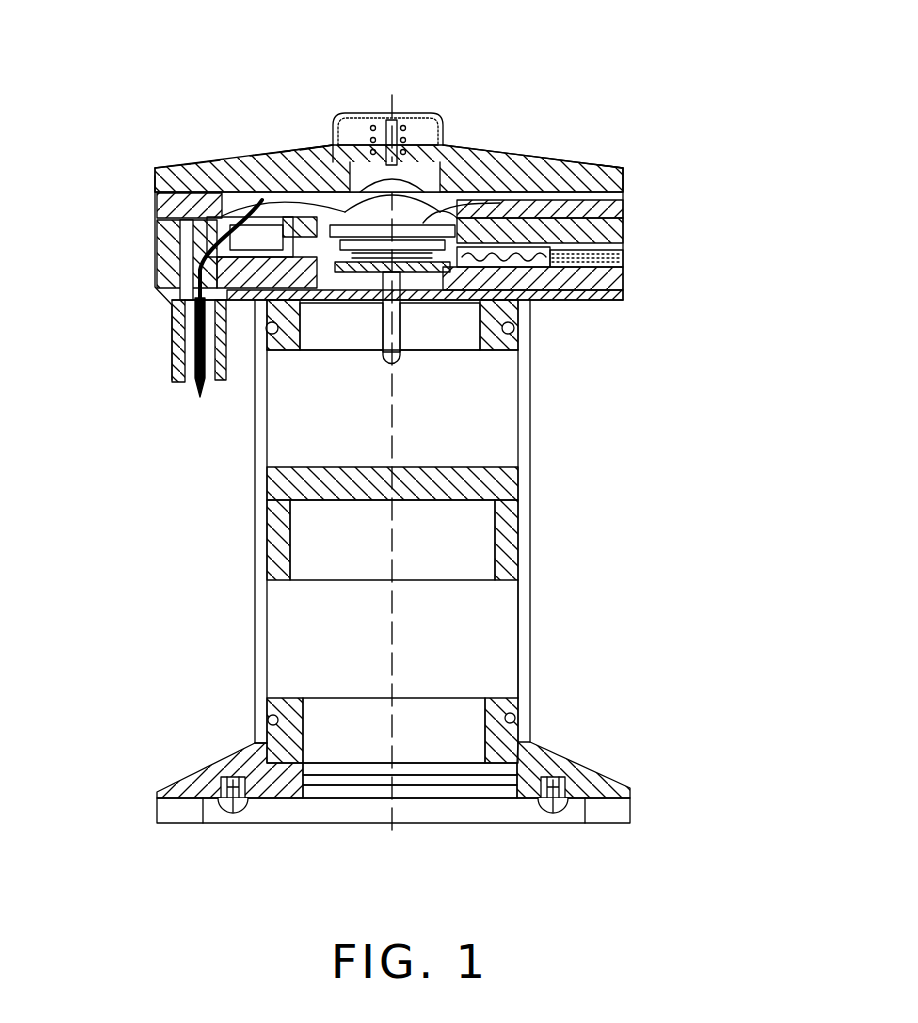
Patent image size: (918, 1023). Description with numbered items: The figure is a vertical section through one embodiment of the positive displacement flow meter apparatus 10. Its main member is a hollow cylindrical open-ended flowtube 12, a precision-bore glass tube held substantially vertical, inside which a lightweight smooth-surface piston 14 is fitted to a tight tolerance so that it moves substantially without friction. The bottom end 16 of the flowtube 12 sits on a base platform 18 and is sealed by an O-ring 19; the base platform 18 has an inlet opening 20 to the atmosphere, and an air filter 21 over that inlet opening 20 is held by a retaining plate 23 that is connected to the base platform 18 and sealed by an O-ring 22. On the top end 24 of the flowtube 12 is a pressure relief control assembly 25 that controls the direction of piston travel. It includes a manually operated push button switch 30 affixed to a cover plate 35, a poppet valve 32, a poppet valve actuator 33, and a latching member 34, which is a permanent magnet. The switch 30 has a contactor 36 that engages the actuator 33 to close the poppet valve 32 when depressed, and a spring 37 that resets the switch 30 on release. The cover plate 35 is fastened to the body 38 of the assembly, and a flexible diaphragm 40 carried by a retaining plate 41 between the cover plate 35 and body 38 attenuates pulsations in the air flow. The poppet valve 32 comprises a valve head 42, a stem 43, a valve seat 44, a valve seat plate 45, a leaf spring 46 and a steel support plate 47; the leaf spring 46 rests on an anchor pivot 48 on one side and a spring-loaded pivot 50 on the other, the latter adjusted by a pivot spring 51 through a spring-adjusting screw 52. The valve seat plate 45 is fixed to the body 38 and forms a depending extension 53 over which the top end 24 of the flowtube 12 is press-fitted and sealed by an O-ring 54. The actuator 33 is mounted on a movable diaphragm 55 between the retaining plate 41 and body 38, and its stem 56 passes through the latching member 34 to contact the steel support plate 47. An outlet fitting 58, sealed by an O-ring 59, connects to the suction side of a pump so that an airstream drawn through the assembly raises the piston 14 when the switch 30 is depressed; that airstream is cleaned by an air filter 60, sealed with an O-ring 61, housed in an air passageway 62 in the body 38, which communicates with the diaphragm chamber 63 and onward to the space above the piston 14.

The flow meter apparatus 10 is at (643, 410).
The flowtube 12 is at (523, 540).
The piston 14 is at (507, 483).
The bottom end 16 is at (523, 673).
The base platform 18 is at (518, 775).
The O-ring 19 is at (505, 722).
The inlet opening 20 is at (438, 770).
The air filter 21 is at (383, 778).
The O-ring 22 is at (525, 793).
The retaining plate 23 is at (523, 792).
The top end 24 is at (523, 318).
The pressure relief control assembly 25 is at (652, 184).
The push button switch 30 is at (420, 178).
The poppet valve 32 is at (560, 140).
The poppet valve actuator 33 is at (333, 142).
The latching member 34 is at (305, 165).
The cover plate 35 is at (612, 160).
The contactor 36 is at (440, 205).
The spring 37 is at (390, 123).
The body 38 is at (155, 248).
The flexible diaphragm 40 is at (200, 172).
The retaining plate 41 is at (155, 182).
The valve head 42 is at (411, 290).
The stem 43 is at (382, 352).
The valve seat 44 is at (347, 282).
The valve seat plate 45 is at (433, 282).
The leaf spring 46 is at (253, 367).
The steel support plate 47 is at (180, 387).
The anchor pivot 48 is at (172, 355).
The spring-loaded pivot 50 is at (625, 218).
The pivot spring 51 is at (625, 297).
The spring-adjusting screw 52 is at (625, 257).
The depending extension 53 is at (478, 347).
The O-ring 54 is at (517, 335).
The movable diaphragm 55 is at (470, 225).
The stem 56 is at (405, 150).
The outlet fitting 58 is at (170, 320).
The O-ring 59 is at (155, 285).
The air filter 60 is at (155, 210).
The O-ring 61 is at (155, 228).
The air passageway 62 is at (160, 180).
The diaphragm chamber 63 is at (272, 168).